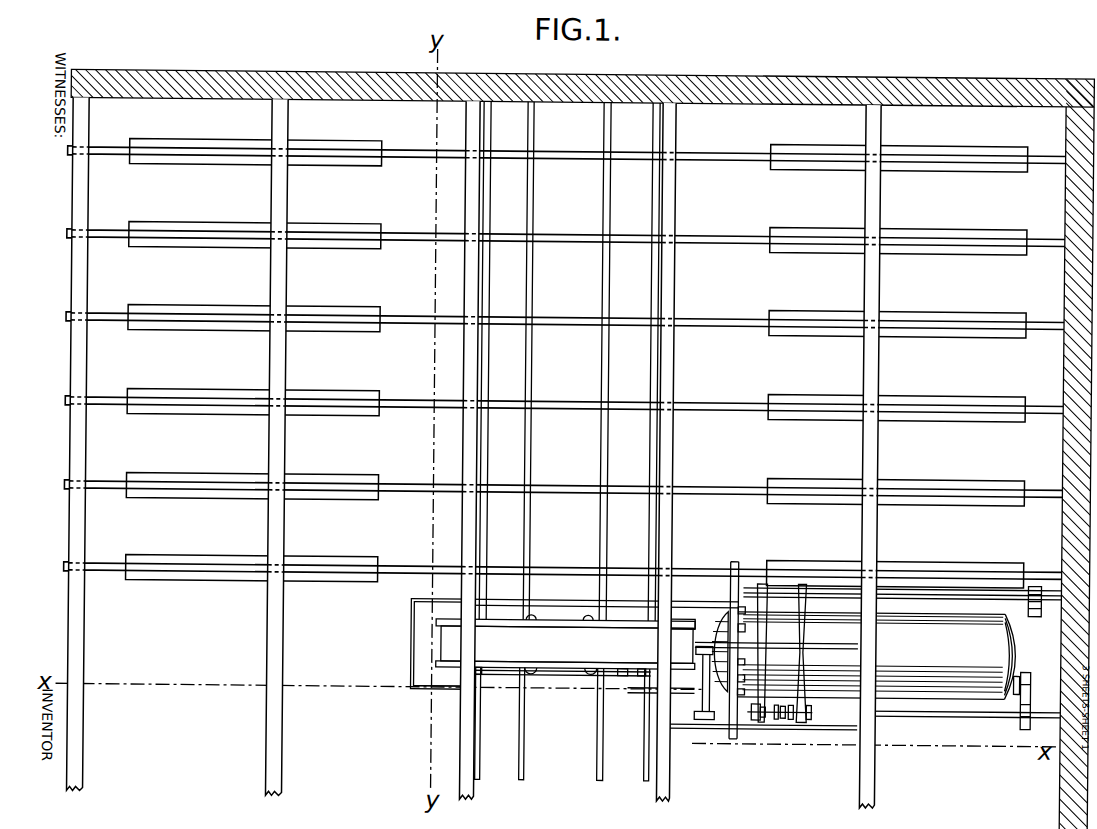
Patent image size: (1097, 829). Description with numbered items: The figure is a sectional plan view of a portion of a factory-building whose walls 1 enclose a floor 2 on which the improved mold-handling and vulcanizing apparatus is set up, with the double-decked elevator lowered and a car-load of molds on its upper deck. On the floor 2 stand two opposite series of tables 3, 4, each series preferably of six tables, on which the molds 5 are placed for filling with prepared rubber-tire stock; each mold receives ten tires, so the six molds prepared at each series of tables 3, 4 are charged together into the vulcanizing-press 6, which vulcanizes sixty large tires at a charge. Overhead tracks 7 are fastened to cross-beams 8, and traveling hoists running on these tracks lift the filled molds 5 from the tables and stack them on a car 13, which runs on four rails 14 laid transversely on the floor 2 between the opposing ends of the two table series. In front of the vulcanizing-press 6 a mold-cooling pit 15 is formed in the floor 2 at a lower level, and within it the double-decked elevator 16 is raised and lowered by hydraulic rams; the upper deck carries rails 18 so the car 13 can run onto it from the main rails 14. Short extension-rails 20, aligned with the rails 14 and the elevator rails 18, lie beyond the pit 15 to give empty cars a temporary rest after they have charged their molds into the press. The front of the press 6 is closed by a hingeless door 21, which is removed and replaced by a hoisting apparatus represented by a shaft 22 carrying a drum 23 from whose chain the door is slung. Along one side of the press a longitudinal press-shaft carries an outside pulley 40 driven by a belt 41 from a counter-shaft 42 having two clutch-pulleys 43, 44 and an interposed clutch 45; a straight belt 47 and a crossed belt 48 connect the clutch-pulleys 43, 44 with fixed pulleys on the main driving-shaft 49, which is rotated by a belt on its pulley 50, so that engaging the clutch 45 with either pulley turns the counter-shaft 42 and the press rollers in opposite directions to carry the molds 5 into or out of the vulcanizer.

The walls 1 is at (262, 74).
The floor 2 is at (567, 506).
The tables 3 is at (322, 168).
The tables 4 is at (804, 168).
The molds 5 is at (565, 655).
The vulcanizing-press 6 is at (876, 656).
The overhead tracks 7 is at (403, 242).
The cross-beams 8 is at (269, 283).
The car 13 is at (557, 620).
The rails 14 is at (527, 257).
The mold-cooling pit 15 is at (446, 690).
The double-decked elevator 16 is at (416, 642).
The rails 18 is at (598, 673).
The extension-rails 20 is at (481, 720).
The door 21 is at (718, 612).
The shaft 22 is at (697, 700).
The drum 23 is at (697, 645).
The pulley 40 is at (1028, 668).
The belt 41 is at (1025, 692).
The counter-shaft 42 is at (960, 712).
The clutch-pulley 43 is at (758, 718).
The clutch-pulley 44 is at (814, 716).
The clutch 45 is at (783, 720).
The straight belt 47 is at (766, 598).
The crossed belt 48 is at (809, 630).
The main driving-shaft 49 is at (912, 592).
The pulley 50 is at (1034, 582).